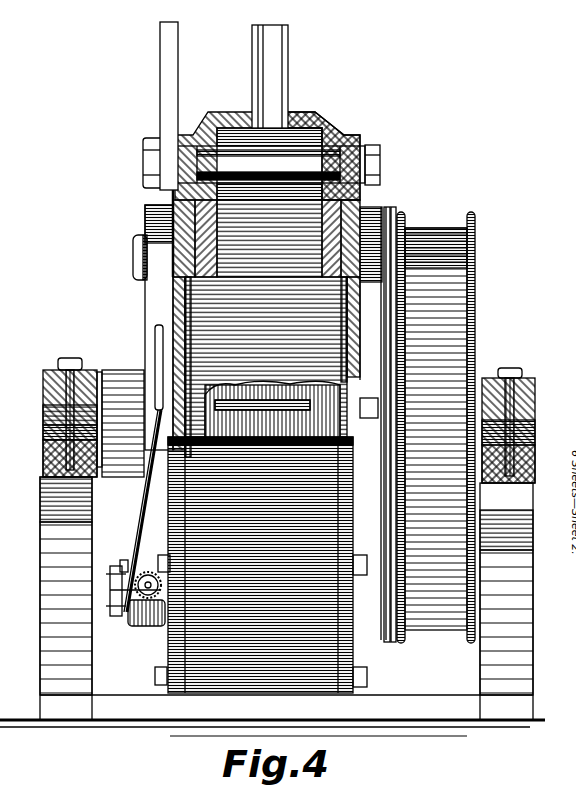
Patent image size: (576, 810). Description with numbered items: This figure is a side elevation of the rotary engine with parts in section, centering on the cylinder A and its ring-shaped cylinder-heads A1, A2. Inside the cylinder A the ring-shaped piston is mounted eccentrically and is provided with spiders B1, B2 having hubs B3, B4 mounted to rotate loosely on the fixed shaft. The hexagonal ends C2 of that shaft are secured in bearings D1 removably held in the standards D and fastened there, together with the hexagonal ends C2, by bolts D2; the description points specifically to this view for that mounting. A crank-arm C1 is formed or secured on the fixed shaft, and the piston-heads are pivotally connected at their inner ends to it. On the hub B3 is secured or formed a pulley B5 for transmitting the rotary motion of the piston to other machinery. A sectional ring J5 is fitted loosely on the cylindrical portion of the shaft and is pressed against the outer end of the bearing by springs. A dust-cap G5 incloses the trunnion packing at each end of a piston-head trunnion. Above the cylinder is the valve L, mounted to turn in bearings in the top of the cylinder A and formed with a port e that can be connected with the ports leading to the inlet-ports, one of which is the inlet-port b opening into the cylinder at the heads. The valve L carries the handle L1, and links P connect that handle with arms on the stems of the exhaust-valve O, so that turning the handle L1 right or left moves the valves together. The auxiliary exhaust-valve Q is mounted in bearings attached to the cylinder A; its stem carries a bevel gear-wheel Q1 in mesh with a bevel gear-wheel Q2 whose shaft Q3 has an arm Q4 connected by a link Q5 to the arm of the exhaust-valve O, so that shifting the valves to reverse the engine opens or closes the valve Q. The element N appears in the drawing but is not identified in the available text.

The handle L1 is at (162, 106).
The upright rod N is at (278, 88).
The valve L is at (312, 125).
The valve-port e is at (300, 138).
The cylinder-head A1 is at (362, 190).
The cylinder-head A2 is at (173, 198).
The dust-cap G5 is at (136, 270).
The spider B2 is at (155, 303).
The link P is at (155, 333).
The inlet-port b is at (189, 360).
The spider B1 is at (385, 320).
The bolt D2 is at (70, 360).
The sectional ring J5 is at (100, 372).
The hub B4 is at (125, 375).
The bearing D1 is at (60, 385).
The crank-arm C1 is at (49, 418).
The hexagonal end C2 is at (55, 432).
The pulley B5 is at (440, 427).
The hub B3 is at (395, 408).
The exhaust-valve O is at (310, 405).
The cylinder A is at (260, 565).
The link Q5 is at (150, 495).
The bevel gear-wheel Q2 is at (126, 560).
The shaft Q3 is at (112, 582).
The arm Q4 is at (110, 588).
The standard D is at (50, 610).
The exhaust-valve Q is at (134, 622).
The bevel gear-wheel Q1 is at (155, 598).